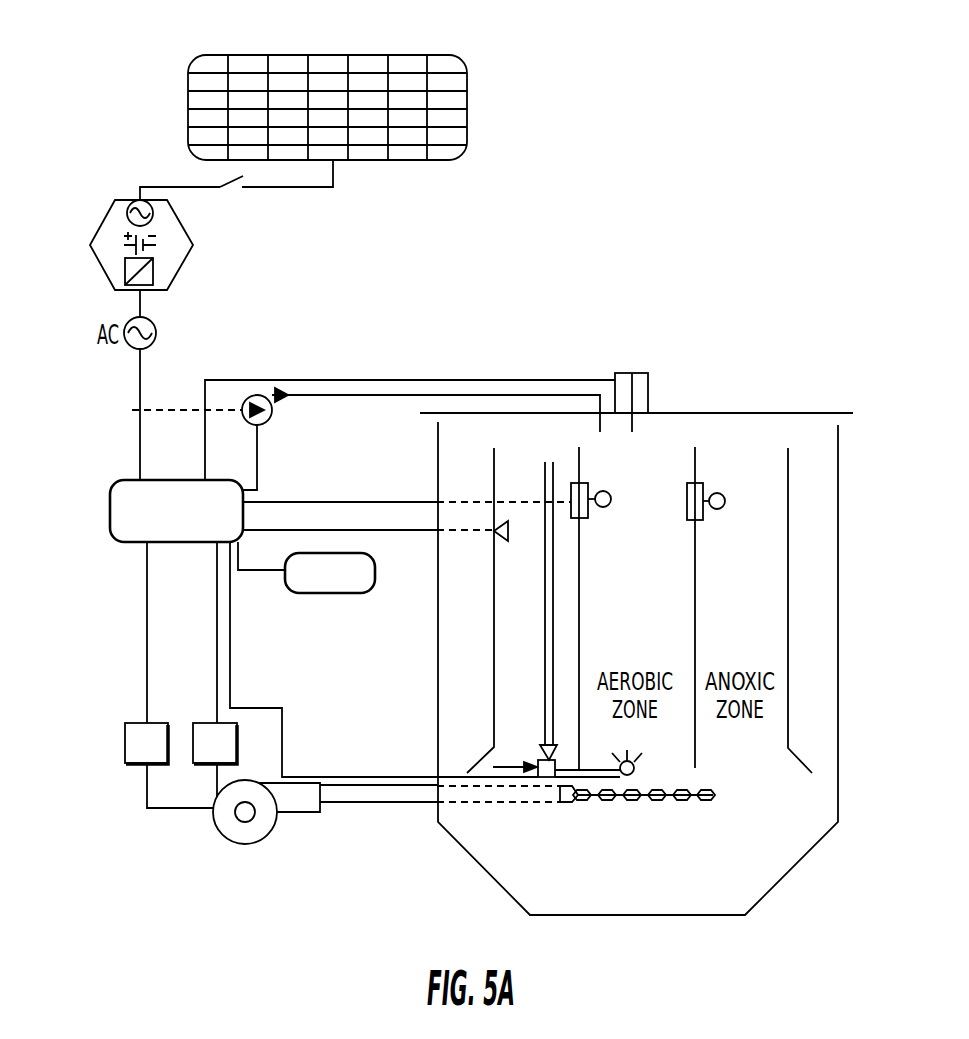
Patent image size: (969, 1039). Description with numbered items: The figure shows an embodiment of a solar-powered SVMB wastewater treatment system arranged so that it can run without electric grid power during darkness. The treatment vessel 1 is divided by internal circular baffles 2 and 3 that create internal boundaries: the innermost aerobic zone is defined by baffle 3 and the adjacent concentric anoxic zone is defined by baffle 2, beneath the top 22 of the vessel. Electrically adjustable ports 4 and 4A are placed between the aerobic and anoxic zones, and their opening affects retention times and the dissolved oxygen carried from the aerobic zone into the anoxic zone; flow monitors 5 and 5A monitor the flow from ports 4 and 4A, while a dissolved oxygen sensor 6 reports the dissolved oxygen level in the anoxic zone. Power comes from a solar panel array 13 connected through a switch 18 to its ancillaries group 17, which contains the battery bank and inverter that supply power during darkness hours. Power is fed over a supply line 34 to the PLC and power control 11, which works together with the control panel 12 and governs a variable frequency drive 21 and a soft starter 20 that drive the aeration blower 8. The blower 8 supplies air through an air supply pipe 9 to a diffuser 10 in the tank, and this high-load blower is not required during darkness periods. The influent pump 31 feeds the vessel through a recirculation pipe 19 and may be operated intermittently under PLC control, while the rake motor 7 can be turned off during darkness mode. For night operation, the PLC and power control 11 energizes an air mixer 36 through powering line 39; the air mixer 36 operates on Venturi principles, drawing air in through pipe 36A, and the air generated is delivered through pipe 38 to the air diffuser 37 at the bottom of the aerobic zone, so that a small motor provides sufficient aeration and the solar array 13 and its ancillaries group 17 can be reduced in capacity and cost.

The treatment tank 1 is at (838, 493).
The internal circular baffle 2 is at (494, 462).
The internal circular baffle 3 is at (579, 455).
The electrically adjustable port 4 is at (588, 483).
The flow monitor 5 is at (608, 507).
The electrically adjustable port 4A is at (703, 483).
The flow monitor 5A is at (722, 508).
The dissolved oxygen sensor 6 is at (508, 535).
The rake motor 7 is at (648, 392).
The aeration blower 8 is at (275, 824).
The air supply pipe 9 is at (345, 805).
The diffuser 10 is at (591, 800).
The PLC and power control system 11 is at (127, 480).
The control panel 12 is at (310, 593).
The solar panel array 13 is at (188, 102).
The ancillaries group 17 is at (100, 217).
The switch 18 is at (219, 190).
The recirculation pipe 19 is at (318, 380).
The soft starter 20 is at (196, 723).
The variable frequency drive 21 is at (127, 723).
The tank cover 22 is at (735, 413).
The influent pump 31 is at (270, 422).
The power supply line 34 is at (132, 410).
The air mixer 36 is at (540, 760).
The pipe 36A is at (545, 677).
The air diffuser 37 is at (640, 773).
The pipe 38 is at (595, 769).
The powering line 39 is at (383, 777).